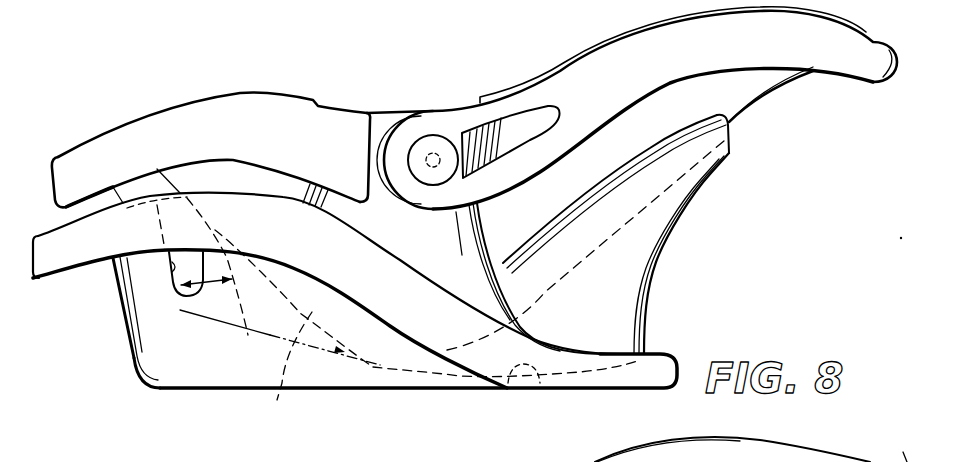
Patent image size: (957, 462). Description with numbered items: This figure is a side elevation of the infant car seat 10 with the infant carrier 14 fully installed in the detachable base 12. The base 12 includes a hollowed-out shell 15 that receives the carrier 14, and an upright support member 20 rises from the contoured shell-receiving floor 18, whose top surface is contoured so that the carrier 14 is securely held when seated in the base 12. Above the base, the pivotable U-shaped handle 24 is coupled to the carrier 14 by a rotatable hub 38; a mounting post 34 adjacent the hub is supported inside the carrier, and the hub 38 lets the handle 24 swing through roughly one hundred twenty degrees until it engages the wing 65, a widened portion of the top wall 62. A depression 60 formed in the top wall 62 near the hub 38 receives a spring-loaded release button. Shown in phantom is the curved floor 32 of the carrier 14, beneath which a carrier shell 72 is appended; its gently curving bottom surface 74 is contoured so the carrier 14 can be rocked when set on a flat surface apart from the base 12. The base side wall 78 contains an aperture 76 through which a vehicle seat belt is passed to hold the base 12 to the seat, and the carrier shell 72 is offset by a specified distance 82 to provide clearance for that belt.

The infant car seat 10 is at (150, 103).
The detachable base 12 is at (45, 285).
The infant carrier 14 is at (115, 120).
The shell 15 is at (127, 348).
The contoured shell-receiving floor 18 is at (527, 383).
The upright support member 20 is at (507, 227).
The handle 24 is at (857, 65).
The floor 32 is at (596, 251).
The mounting post 34 is at (430, 152).
The hub 38 is at (433, 186).
The depression 60 is at (460, 100).
The top wall 62 is at (507, 97).
The wing 65 is at (347, 143).
The carrier shell 72 is at (651, 300).
The bottom surface 74 is at (434, 373).
The aperture 76 is at (173, 276).
The side wall 78 is at (177, 364).
The offset distance 82 is at (218, 283).